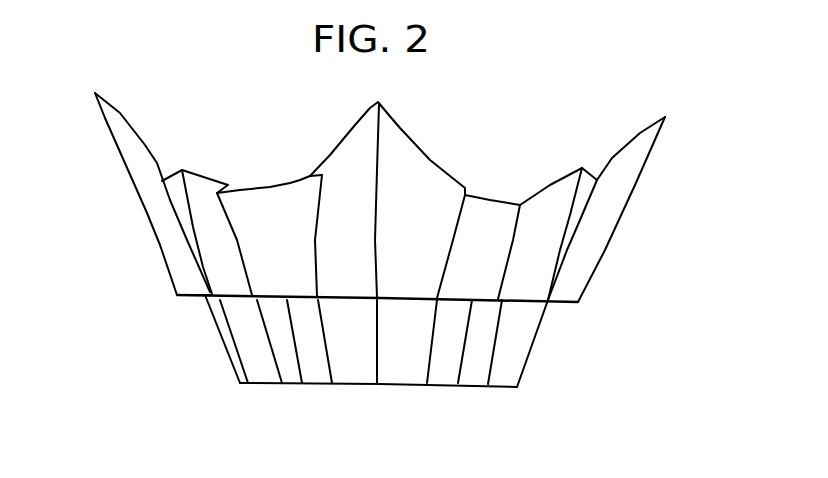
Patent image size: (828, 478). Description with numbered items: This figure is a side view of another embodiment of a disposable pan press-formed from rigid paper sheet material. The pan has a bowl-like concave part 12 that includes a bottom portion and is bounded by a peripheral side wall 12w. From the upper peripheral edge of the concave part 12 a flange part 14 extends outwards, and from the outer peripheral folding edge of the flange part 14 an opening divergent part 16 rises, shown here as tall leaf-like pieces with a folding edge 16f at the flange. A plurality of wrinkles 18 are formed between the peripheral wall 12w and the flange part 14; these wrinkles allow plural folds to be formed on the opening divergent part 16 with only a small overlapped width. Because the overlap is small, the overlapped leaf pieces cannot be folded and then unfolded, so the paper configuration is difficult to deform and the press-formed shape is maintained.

The bowl-like concave part 12 is at (405, 365).
The peripheral side wall 12w is at (530, 353).
The flange part 14 is at (562, 302).
The opening divergent part 16 is at (420, 143).
The flap fold line 16f is at (177, 295).
The wrinkles 18 is at (377, 357).